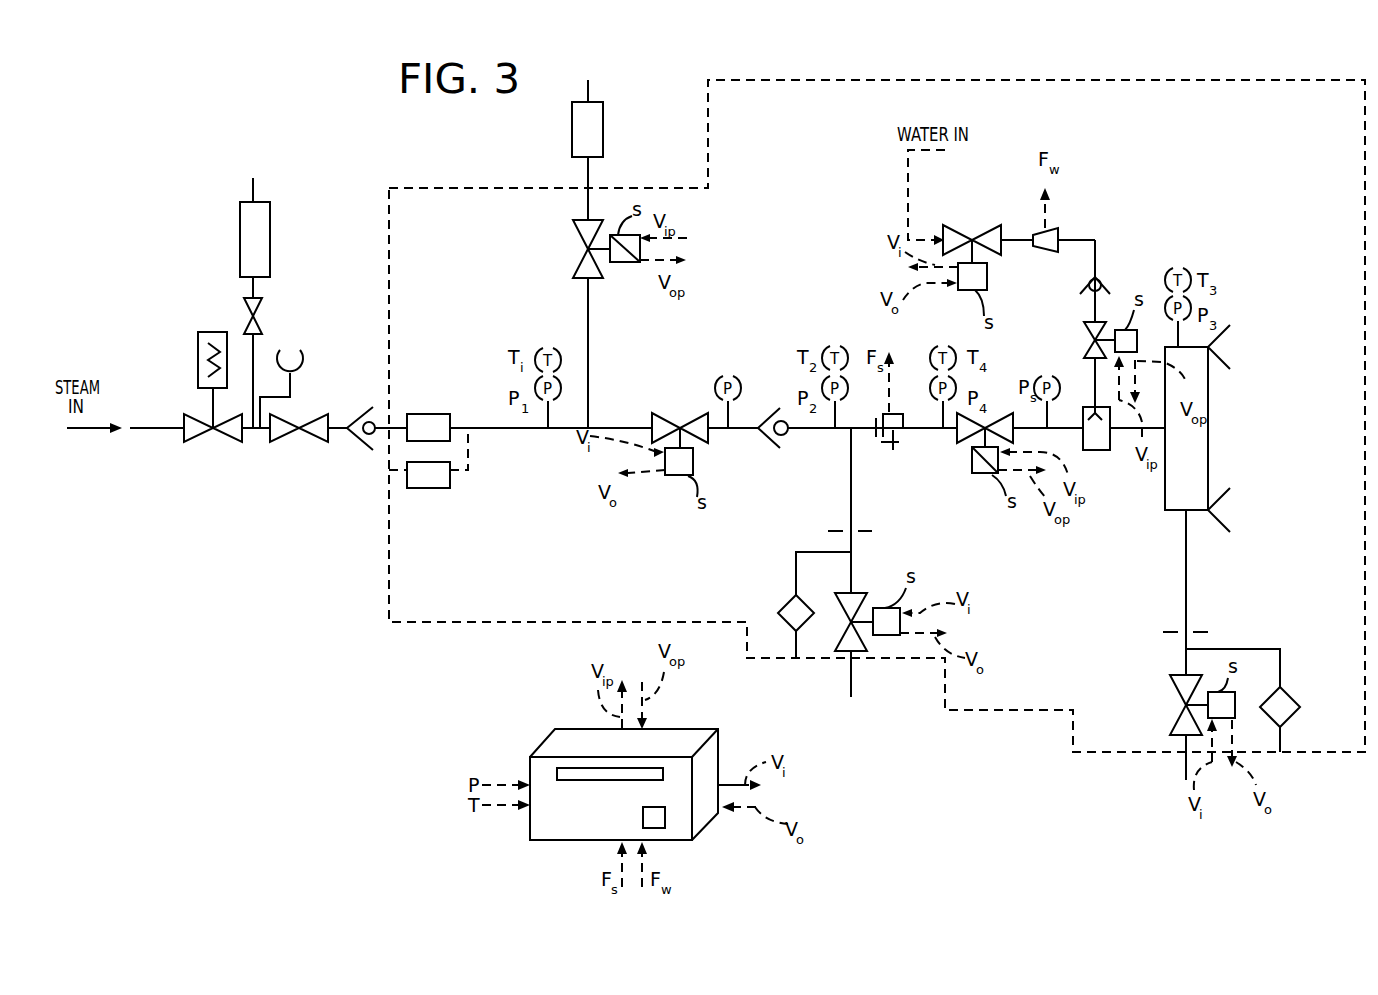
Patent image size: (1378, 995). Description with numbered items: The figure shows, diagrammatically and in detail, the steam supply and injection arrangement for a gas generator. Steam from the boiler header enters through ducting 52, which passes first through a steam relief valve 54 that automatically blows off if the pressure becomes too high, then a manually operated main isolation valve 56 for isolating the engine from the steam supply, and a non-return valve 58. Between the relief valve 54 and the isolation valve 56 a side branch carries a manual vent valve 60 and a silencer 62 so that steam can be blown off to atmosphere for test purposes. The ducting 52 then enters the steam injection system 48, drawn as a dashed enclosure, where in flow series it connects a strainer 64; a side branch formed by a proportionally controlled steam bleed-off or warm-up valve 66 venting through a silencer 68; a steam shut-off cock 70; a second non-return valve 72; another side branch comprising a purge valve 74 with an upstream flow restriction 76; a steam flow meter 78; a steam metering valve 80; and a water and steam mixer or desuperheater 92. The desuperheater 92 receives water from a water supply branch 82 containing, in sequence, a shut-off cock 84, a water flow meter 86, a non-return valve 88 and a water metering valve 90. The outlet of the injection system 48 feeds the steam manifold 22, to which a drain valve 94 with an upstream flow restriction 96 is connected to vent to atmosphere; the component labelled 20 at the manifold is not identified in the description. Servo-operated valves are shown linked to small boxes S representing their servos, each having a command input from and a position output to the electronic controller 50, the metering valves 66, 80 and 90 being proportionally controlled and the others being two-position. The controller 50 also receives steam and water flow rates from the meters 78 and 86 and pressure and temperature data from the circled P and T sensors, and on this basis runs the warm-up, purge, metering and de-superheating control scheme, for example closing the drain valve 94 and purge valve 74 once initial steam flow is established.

The discharge outlet 20 is at (1233, 516).
The steam manifold 22 is at (1165, 450).
The steam injection system 48 is at (858, 76).
The electronic controller 50 is at (577, 830).
The ducting 52 is at (169, 433).
The steam relief valve 54 is at (213, 444).
The main isolation valve 56 is at (296, 444).
The non-return valve 58 is at (358, 415).
The vent valve 60 is at (248, 311).
The silencer 62 is at (255, 235).
The strainer 64 is at (421, 421).
The steam bleed-off or warm-up valve 66 is at (580, 242).
The silencer 68 is at (604, 132).
The steam shut-off cock 70 is at (672, 420).
The non-return valve 72 is at (773, 450).
The purge valve 74 is at (887, 636).
The flow restriction 76 is at (855, 527).
The steam flow meter 78 is at (905, 432).
The steam metering valve 80 is at (975, 474).
The water supply branch 82 is at (1095, 220).
The shut-off cock 84 is at (968, 235).
The water flow meter 86 is at (1042, 252).
The non-return valve 88 is at (1110, 294).
The water metering valve 90 is at (1087, 338).
The water and steam mixer or desuperheater 92 is at (1105, 450).
The drain valve 94 is at (1180, 703).
The flow restriction 96 is at (1183, 630).